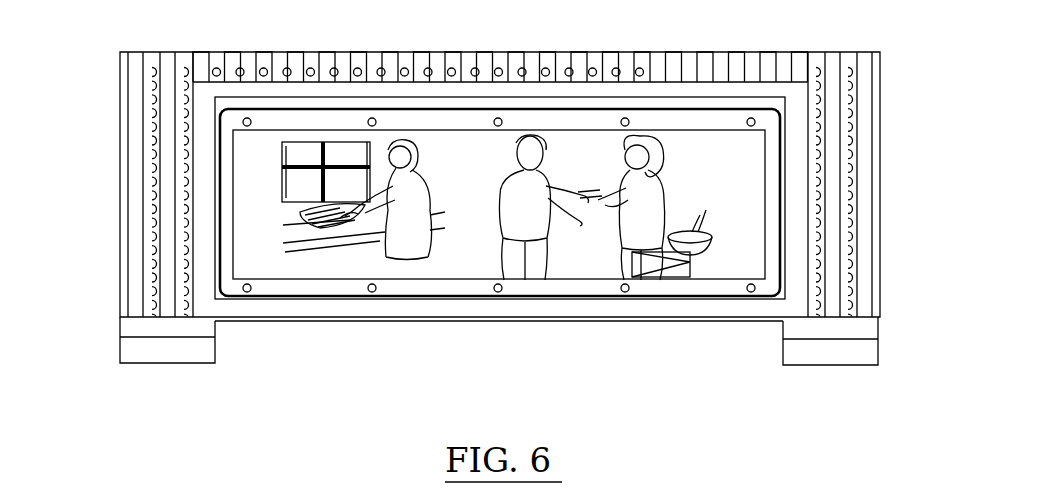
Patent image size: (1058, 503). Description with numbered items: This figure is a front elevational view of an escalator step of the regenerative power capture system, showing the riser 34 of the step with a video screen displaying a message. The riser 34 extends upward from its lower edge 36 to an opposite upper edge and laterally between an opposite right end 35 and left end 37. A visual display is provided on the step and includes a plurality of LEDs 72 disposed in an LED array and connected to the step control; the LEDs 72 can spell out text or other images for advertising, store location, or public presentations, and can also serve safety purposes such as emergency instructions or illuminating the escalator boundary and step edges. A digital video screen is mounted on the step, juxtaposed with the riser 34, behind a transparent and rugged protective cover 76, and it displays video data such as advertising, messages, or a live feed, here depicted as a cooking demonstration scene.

The riser 34 is at (876, 295).
The right end 35 is at (882, 122).
The lower edge 36 is at (579, 322).
The left end 37 is at (119, 233).
The LEDs 72 is at (853, 222).
The protective cover 76 is at (500, 198).